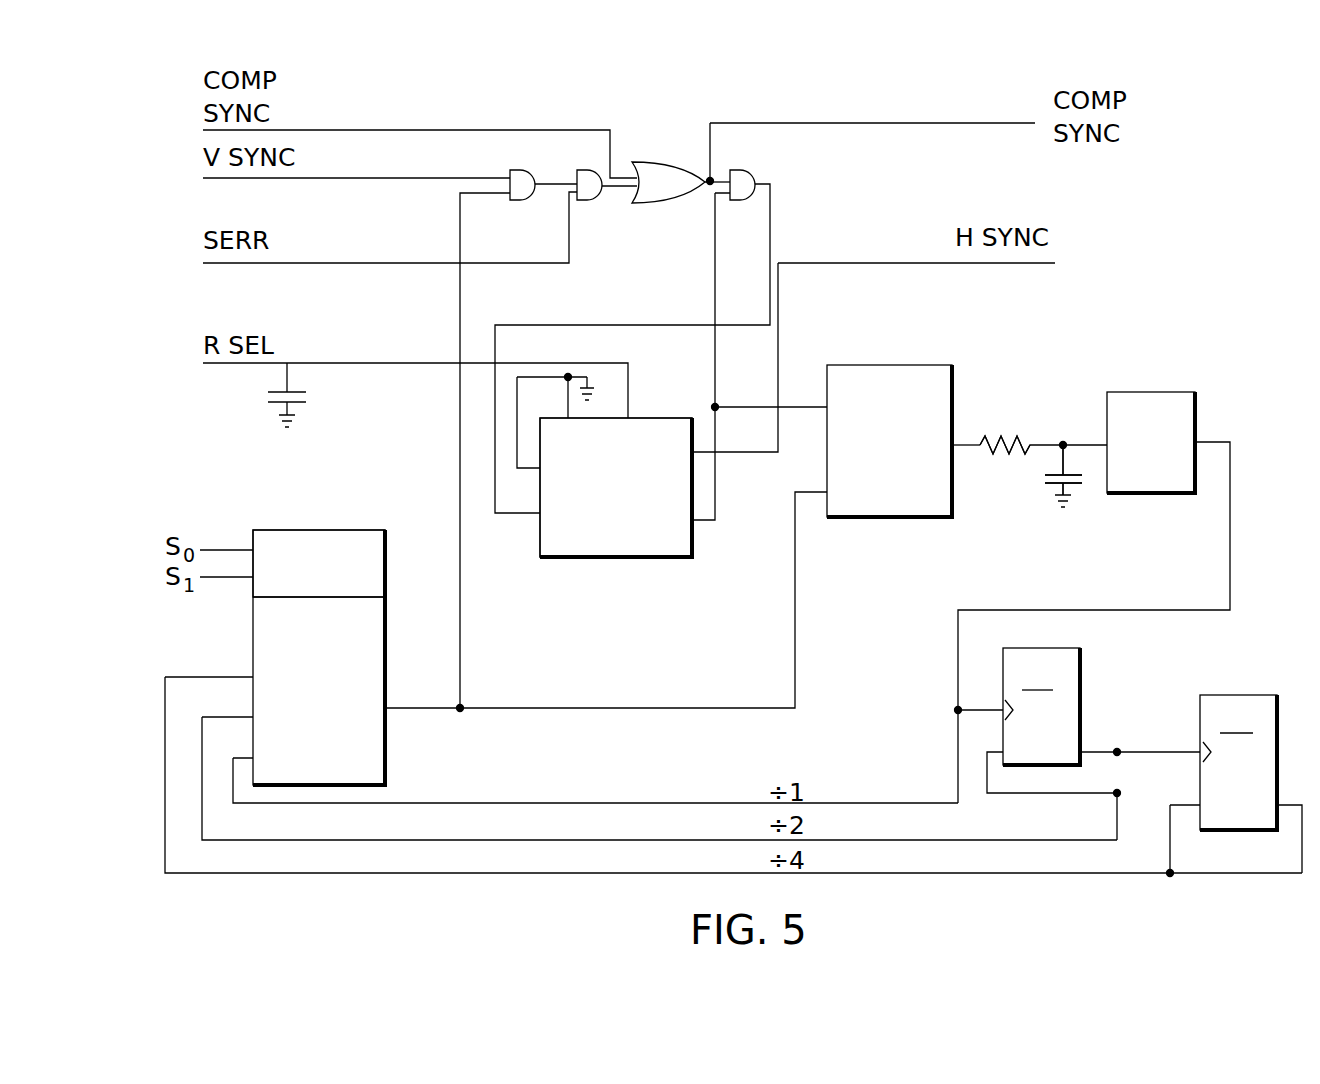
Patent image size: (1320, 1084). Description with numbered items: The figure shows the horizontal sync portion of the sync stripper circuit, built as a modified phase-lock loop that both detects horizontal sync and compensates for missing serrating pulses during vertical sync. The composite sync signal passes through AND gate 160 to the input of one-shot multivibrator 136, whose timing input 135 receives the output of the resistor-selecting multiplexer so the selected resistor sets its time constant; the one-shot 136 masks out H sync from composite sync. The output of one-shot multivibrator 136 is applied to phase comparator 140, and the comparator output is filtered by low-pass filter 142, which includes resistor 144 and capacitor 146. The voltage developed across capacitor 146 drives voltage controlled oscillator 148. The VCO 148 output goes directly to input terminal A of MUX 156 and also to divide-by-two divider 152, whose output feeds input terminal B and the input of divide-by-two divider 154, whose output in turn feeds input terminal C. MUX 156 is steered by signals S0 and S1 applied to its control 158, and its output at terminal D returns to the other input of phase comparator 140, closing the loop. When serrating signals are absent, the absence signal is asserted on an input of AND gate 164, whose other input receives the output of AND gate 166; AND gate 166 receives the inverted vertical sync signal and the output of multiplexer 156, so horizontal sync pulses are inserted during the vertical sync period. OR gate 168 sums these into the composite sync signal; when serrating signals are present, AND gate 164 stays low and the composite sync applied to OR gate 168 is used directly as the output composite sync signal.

The input of one-shot multivibrator 135 is at (634, 418).
The one-shot multivibrator 136 is at (624, 557).
The phase comparator 140 is at (893, 517).
The low-pass filter 142 is at (1028, 404).
The resistor 144 is at (1002, 458).
The capacitor 146 is at (1080, 486).
The voltage controlled oscillator 148 is at (1155, 494).
The divide-by-two divider 152 is at (1083, 680).
The divide-by-two divider 154 is at (1250, 695).
The multiplexer 156 is at (388, 752).
The control of MUX 158 is at (325, 530).
The AND gate 160 is at (756, 162).
The AND gate 164 is at (595, 200).
The AND gate 166 is at (518, 170).
The OR gate 168 is at (658, 162).